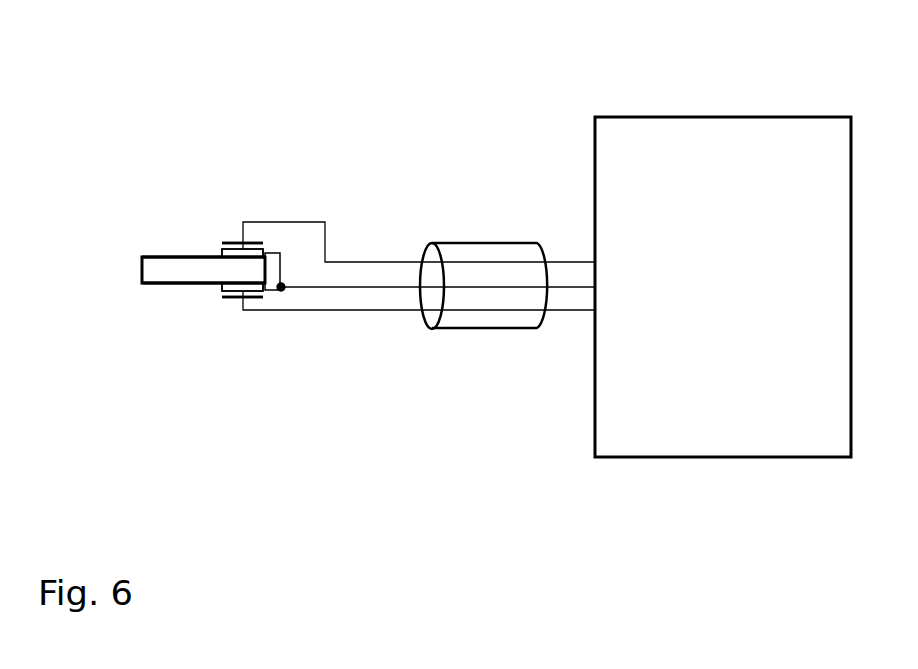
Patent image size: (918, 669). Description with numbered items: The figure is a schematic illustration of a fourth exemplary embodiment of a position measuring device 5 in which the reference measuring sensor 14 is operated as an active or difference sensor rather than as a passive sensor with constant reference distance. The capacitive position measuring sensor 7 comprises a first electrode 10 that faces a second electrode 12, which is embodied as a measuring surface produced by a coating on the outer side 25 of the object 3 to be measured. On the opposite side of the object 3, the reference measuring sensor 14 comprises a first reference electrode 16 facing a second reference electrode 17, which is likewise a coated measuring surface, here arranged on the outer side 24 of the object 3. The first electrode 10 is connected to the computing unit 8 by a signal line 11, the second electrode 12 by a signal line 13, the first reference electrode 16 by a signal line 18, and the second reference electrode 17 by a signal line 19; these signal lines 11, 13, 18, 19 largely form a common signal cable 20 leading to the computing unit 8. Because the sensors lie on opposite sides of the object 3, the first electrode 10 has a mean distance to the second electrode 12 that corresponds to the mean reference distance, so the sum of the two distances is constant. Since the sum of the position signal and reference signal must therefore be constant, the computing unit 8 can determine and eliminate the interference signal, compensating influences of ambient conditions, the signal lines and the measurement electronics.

The object to be measured 3 is at (145, 267).
The position measuring device 5 is at (510, 135).
The capacitive position measuring sensor 7 is at (215, 300).
The computing unit 8 is at (718, 117).
The first electrode 10 is at (237, 297).
The signal line 11 is at (345, 310).
The second electrode 12 is at (222, 288).
The signal line 13 is at (273, 290).
The capacitive reference measuring sensor 14 is at (221, 243).
The first reference electrode 16 is at (237, 243).
The second reference electrode 17 is at (258, 249).
The signal line 18 is at (382, 262).
The signal line 19 is at (280, 270).
The common signal cable 20 is at (463, 243).
The outer side of the object 24 is at (155, 257).
The outer side of the object 25 is at (155, 285).